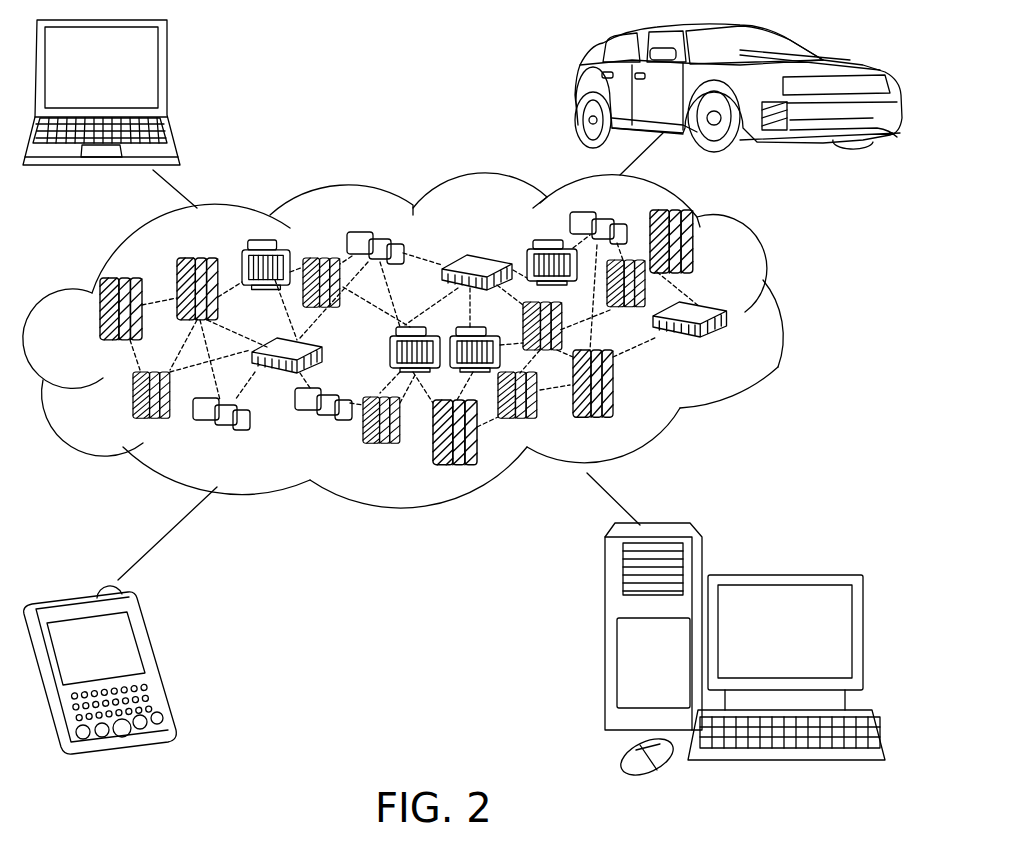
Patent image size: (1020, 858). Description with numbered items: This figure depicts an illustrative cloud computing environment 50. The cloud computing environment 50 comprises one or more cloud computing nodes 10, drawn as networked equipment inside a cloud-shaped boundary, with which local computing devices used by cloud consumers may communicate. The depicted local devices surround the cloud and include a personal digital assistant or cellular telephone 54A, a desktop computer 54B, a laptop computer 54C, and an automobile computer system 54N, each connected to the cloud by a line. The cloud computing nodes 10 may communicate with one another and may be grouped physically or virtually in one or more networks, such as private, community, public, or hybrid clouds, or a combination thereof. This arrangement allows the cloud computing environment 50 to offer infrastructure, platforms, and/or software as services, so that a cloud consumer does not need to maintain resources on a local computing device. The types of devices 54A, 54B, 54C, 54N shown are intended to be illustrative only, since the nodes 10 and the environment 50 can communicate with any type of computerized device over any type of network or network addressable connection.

The cloud computing nodes 10 is at (731, 346).
The cloud computing environment 50 is at (782, 320).
The personal digital assistant (PDA) or cellular telephone 54A is at (160, 657).
The desktop computer 54B is at (782, 575).
The laptop computer 54C is at (165, 78).
The automobile computer system 54N is at (576, 90).